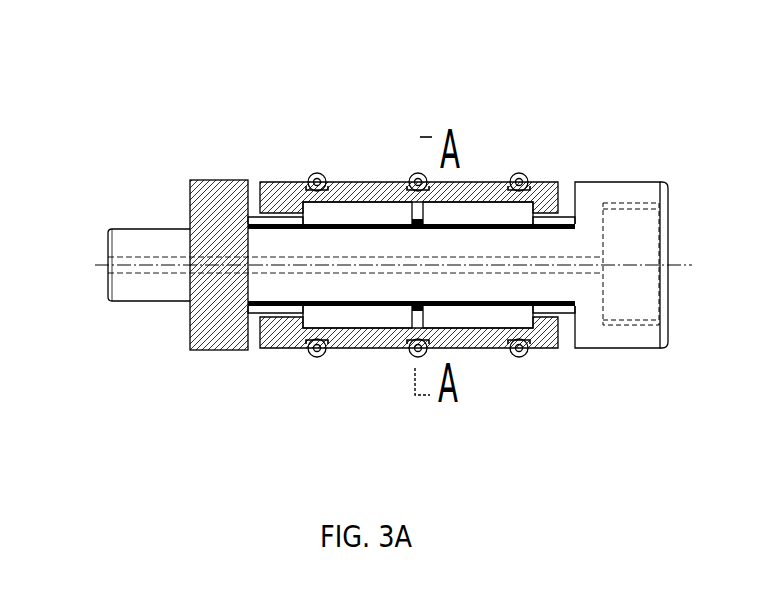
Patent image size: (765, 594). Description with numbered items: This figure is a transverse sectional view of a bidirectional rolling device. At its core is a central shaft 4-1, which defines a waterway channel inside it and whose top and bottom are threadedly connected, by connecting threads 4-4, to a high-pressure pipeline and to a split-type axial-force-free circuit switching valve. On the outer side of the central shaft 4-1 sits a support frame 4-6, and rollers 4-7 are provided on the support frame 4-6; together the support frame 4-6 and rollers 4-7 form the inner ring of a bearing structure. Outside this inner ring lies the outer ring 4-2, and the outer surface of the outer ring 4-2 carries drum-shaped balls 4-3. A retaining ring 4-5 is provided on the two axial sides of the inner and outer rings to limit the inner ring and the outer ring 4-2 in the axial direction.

The central shaft 4-1 is at (183, 262).
The outer ring 4-2 is at (282, 195).
The drum-shaped balls 4-3 is at (519, 175).
The connecting threads 4-4 is at (659, 257).
The retaining ring 4-5 is at (203, 333).
The support frame 4-6 is at (270, 330).
The rollers 4-7 is at (457, 313).